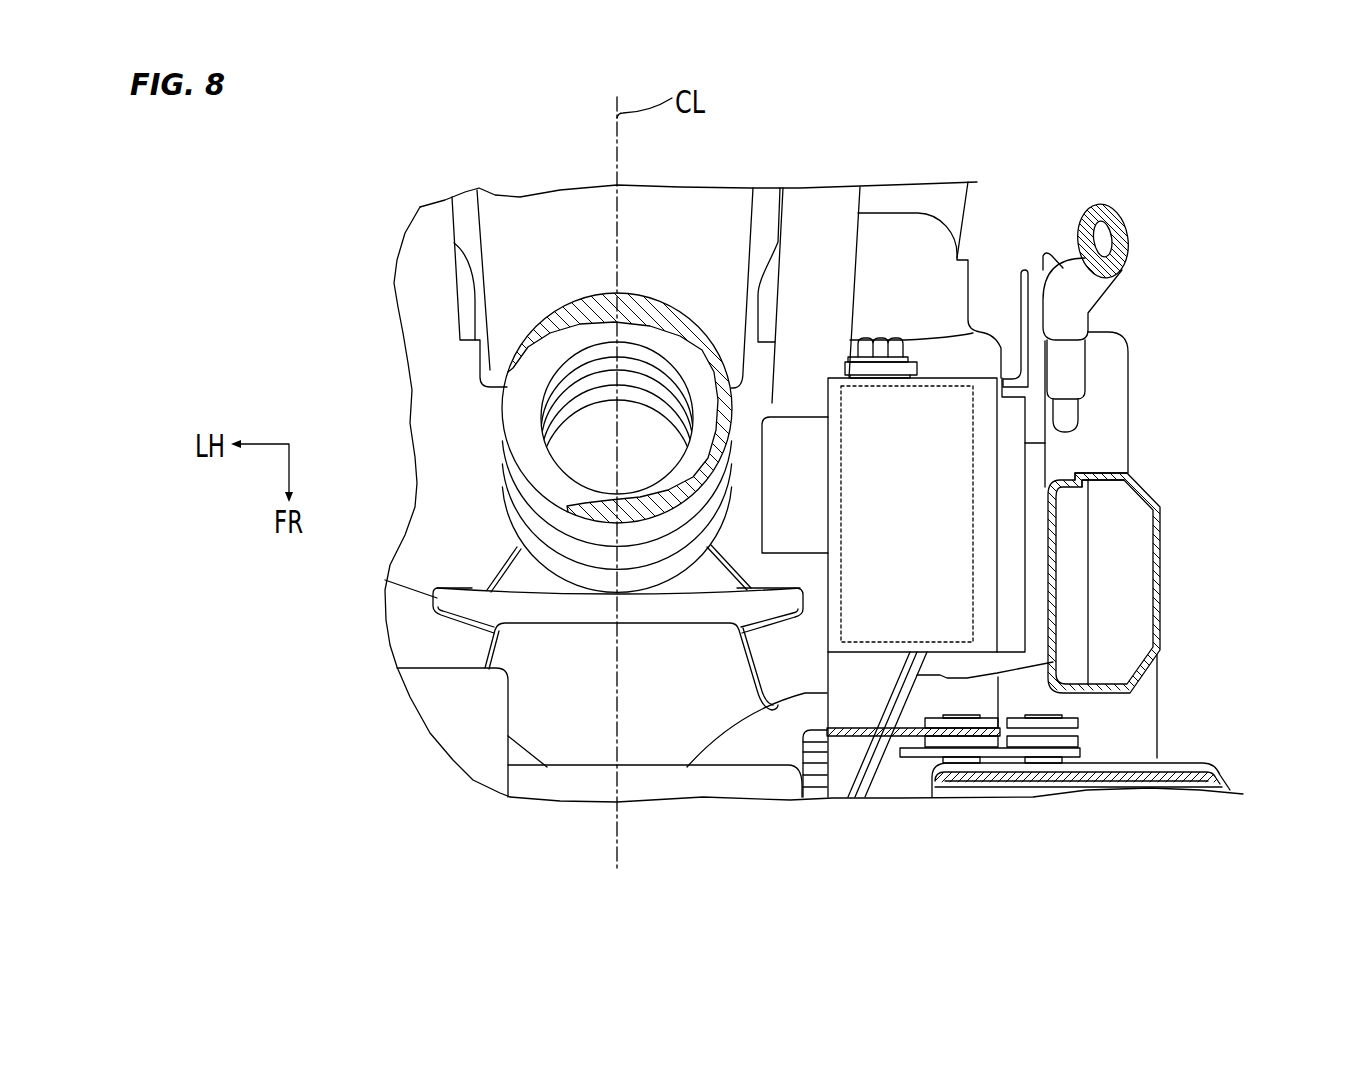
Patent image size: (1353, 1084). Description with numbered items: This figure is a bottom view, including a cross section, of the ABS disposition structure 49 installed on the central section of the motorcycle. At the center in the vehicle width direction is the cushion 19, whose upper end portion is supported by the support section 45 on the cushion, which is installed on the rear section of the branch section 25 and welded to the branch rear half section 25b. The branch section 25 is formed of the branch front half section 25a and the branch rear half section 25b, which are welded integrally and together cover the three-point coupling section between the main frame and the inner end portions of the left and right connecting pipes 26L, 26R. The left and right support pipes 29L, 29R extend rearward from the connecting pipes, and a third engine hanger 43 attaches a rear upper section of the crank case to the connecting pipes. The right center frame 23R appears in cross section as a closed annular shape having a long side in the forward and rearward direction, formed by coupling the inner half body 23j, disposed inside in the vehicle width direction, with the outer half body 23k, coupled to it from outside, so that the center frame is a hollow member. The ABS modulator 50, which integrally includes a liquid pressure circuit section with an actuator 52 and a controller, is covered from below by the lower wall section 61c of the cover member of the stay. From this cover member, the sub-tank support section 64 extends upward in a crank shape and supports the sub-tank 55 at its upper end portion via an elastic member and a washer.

The cushion 19 is at (511, 407).
The left support pipe 29L is at (427, 232).
The right support pipe 29R is at (832, 203).
The support section on the cushion 45 is at (500, 552).
The actuator 52 is at (770, 537).
The branch rear half section 25b is at (480, 598).
The left connecting pipe 26L is at (427, 650).
The branch section 25 is at (520, 760).
The branch front half section 25a is at (568, 732).
The right connecting pipe 26R is at (803, 677).
The ABS modulator 50 is at (810, 403).
The lower wall section 61c is at (830, 517).
The sub-tank support section 64 is at (1033, 283).
The sub-tank 55 is at (1117, 382).
The inner half body 23j is at (1075, 470).
The outer half body 23k is at (1162, 560).
The right center frame 23R is at (1178, 606).
The third engine hanger 43 is at (873, 677).
The ABS disposition structure 49 is at (1095, 132).